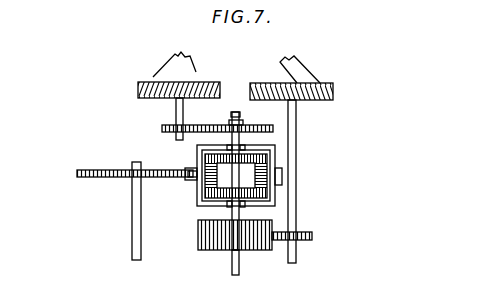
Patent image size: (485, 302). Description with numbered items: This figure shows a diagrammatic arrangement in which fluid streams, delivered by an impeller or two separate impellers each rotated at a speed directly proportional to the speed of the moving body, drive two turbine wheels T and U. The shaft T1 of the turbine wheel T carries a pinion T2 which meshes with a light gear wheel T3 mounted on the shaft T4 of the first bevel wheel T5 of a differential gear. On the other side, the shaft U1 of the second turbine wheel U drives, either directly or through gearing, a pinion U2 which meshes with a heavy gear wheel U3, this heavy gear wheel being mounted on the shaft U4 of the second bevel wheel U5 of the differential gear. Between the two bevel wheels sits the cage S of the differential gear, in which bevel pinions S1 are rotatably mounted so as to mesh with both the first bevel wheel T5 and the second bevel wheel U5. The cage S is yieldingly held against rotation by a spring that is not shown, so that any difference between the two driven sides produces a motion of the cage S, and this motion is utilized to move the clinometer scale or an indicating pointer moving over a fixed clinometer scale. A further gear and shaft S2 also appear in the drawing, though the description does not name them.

The turbine wheel T is at (140, 83).
The shaft of turbine wheel T T1 is at (177, 108).
The pinion T2 is at (162, 128).
The light gear wheel T3 is at (226, 122).
The shaft of first bevel wheel T4 is at (240, 112).
The first bevel wheel T5 is at (265, 147).
The second turbine wheel U is at (333, 89).
The shaft of second turbine wheel U1 is at (296, 197).
The pinion U2 is at (312, 233).
The heavy gear wheel U3 is at (257, 250).
The shaft of second bevel wheel U4 is at (231, 261).
The second bevel wheel U5 is at (220, 196).
The cage of differential gear S is at (275, 192).
The bevel pinions S1 is at (267, 158).
The rack gear and shaft S2 is at (96, 178).